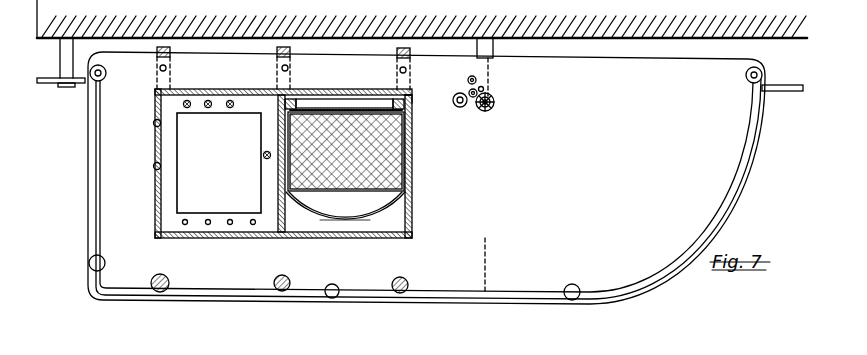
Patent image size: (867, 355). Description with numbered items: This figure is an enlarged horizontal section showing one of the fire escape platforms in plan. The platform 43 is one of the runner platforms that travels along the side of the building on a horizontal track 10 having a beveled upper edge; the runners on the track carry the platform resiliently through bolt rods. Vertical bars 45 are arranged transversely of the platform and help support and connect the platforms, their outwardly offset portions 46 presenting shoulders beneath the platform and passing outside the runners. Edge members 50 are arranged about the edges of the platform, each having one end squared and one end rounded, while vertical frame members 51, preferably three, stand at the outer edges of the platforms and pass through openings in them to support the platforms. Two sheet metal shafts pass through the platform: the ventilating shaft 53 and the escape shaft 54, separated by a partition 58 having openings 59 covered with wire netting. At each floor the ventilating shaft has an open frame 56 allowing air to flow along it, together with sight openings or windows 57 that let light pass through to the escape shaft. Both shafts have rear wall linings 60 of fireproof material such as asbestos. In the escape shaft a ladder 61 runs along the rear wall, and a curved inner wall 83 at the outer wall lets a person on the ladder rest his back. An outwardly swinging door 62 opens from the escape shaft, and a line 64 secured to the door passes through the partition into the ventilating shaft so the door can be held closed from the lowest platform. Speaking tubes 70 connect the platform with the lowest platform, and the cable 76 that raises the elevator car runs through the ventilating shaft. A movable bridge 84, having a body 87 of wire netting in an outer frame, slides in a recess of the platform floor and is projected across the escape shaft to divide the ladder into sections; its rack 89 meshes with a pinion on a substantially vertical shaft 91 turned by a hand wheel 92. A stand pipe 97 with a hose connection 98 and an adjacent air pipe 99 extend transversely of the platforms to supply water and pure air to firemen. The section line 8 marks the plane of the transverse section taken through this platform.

The section line 8 is at (478, 176).
The horizontal track 10 is at (795, 91).
The platform 43 is at (720, 177).
The vertical bar 45 is at (164, 47).
The outwardly offset portion 46 is at (157, 80).
The frame body 50 is at (200, 97).
The vertical frame member 51 is at (160, 293).
The ventilating shaft 53 is at (157, 206).
The escape shaft 54 is at (411, 223).
The open frame 56 is at (167, 142).
The sight opening 57 is at (154, 163).
The partition 58 is at (280, 220).
The opening 59 is at (282, 97).
The lining 60 is at (328, 95).
The ladder 61 is at (407, 96).
The door 62 is at (408, 169).
The line 64 is at (251, 219).
The speaking tube 70 is at (188, 100).
The line 76 is at (263, 154).
The curved inner wall 83 is at (368, 220).
The movable bridge 84 is at (345, 190).
The body 87 is at (384, 140).
The rack 89 is at (372, 112).
The vertical shaft 91 is at (494, 98).
The hand wheel 92 is at (495, 107).
The stand pipe 97 is at (452, 100).
The connection 98 is at (482, 88).
The air pipe 99 is at (485, 38).